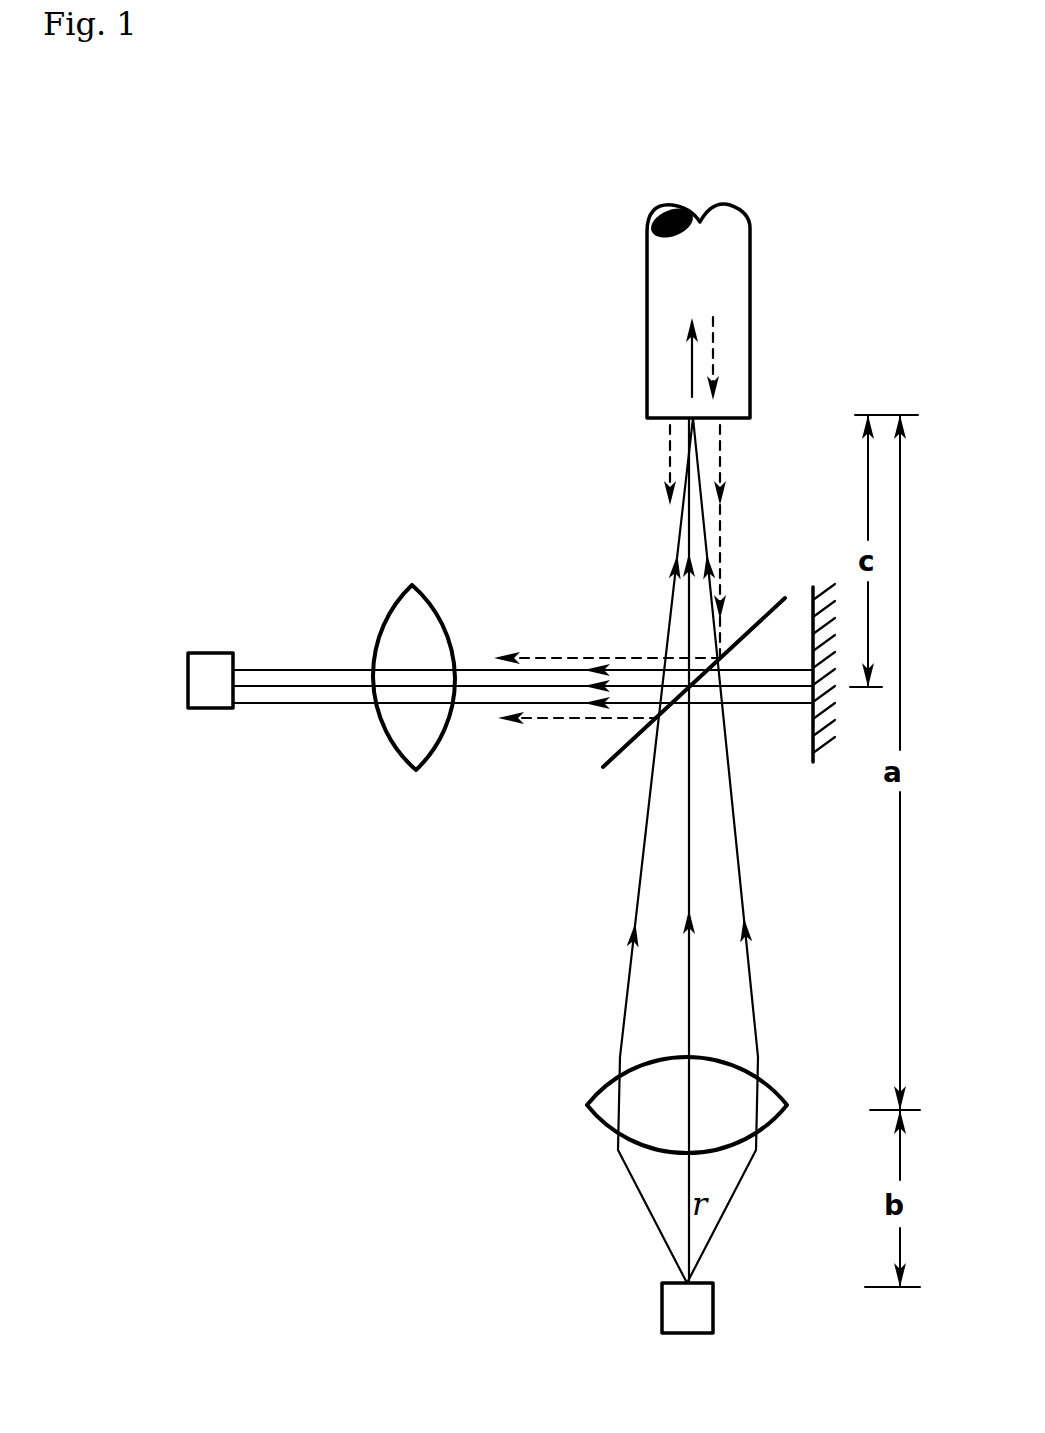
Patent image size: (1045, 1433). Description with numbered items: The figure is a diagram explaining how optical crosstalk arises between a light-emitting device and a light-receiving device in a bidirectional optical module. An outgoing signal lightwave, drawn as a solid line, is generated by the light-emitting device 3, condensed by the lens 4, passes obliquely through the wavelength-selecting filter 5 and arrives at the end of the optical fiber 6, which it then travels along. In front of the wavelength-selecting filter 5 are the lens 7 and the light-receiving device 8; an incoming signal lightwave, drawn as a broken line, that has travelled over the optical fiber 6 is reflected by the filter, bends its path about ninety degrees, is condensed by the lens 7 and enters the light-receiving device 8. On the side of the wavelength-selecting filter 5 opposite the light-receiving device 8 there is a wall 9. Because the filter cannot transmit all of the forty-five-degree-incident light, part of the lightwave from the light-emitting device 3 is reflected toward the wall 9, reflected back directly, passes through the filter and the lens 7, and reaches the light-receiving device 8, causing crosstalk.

The light-emitting device (LD) 3 is at (678, 1313).
The lens 4 is at (607, 1100).
The wavelength-selecting filter 5 is at (628, 745).
The optical fiber 6 is at (658, 345).
The lens 7 is at (422, 727).
The light-receiving device (PD) 8 is at (207, 677).
The wall 9 is at (816, 718).